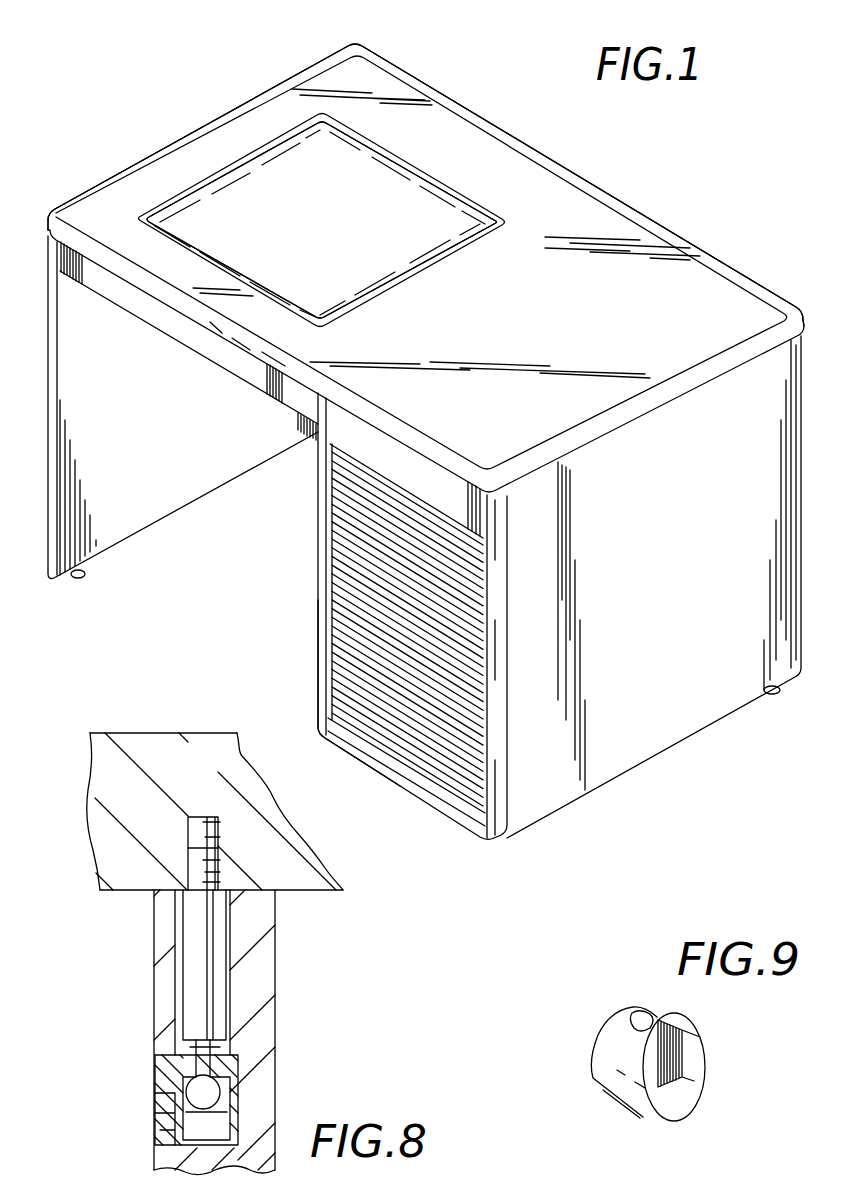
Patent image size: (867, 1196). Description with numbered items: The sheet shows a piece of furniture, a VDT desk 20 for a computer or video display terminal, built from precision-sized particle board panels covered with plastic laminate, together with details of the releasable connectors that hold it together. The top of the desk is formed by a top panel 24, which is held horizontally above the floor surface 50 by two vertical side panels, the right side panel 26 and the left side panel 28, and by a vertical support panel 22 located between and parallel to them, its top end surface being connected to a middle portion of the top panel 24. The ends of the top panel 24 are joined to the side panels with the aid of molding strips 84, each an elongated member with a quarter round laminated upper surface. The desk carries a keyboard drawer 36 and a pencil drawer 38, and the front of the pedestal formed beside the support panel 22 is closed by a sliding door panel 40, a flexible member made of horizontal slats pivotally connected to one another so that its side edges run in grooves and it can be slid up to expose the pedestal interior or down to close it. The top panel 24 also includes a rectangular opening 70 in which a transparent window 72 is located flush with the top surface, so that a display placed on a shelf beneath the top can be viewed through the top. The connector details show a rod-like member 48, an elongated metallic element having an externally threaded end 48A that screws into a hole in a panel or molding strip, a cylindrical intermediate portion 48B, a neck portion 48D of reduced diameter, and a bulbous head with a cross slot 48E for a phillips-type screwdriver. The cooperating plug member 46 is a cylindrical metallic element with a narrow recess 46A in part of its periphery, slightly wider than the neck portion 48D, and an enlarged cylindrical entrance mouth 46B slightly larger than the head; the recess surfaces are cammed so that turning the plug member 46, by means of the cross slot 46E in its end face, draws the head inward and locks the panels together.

In FIG. 1, the VDT desk 20 is at (426, 440).
In FIG. 1, the support panel 22 is at (511, 598).
In FIG. 8, the support panel 22 is at (158, 978).
In FIG. 1, the top panel 24 is at (546, 357).
In FIG. 1, the right side panel 26 is at (671, 558).
In FIG. 1, the left side panel 28 is at (168, 467).
In FIG. 1, the keyboard drawer 36 is at (248, 371).
In FIG. 1, the pencil drawer 38 is at (433, 443).
In FIG. 1, the sliding door panel 40 is at (453, 762).
In FIG. 1, the floor surface 50 is at (287, 622).
In FIG. 1, the rectangular opening 70 is at (445, 258).
In FIG. 1, the transparent window 72 is at (387, 180).
In FIG. 1, the molding strip 84 is at (260, 93).
In FIG. 8, the plug member 46 is at (212, 1091).
In FIG. 9, the plug member 46 is at (646, 1074).
In FIG. 9, the recess 46A is at (675, 1030).
In FIG. 8, the entrance mouth 46B is at (222, 1125).
In FIG. 9, the entrance mouth 46B is at (653, 1020).
In FIG. 8, the cross slot 46E is at (157, 1083).
In FIG. 8, the rod-like member 48 is at (275, 935).
In FIG. 8, the threaded end 48A is at (230, 776).
In FIG. 8, the cylindrical intermediate portion 48B is at (215, 926).
In FIG. 8, the neck portion 48D is at (217, 1045).
In FIG. 8, the cross slot 48E is at (225, 1087).